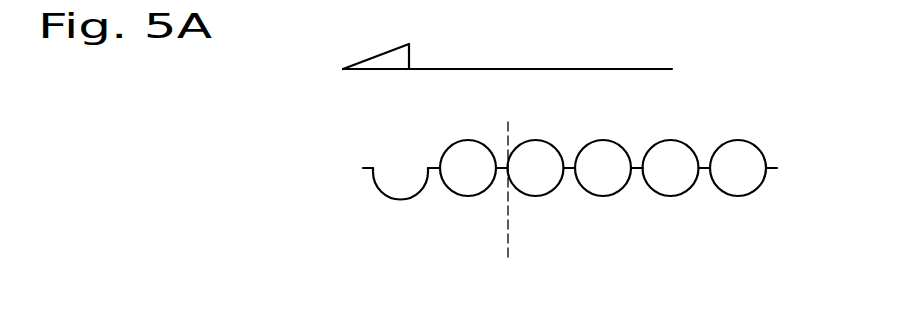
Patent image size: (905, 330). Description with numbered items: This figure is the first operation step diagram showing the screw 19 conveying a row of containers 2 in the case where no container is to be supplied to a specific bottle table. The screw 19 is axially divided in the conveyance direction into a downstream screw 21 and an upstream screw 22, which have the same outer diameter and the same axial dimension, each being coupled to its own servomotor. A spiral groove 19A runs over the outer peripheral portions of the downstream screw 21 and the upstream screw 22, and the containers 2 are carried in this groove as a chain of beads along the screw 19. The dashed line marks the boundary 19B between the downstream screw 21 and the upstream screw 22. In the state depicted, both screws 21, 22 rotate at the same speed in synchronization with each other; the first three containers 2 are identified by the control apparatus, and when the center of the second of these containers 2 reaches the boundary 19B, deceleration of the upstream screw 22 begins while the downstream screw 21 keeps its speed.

The screw 19 is at (780, 118).
The spiral groove 19A is at (383, 183).
The boundary 19B is at (508, 247).
The container 2 is at (462, 155).
The downstream screw 21 is at (427, 207).
The upstream screw 22 is at (640, 202).